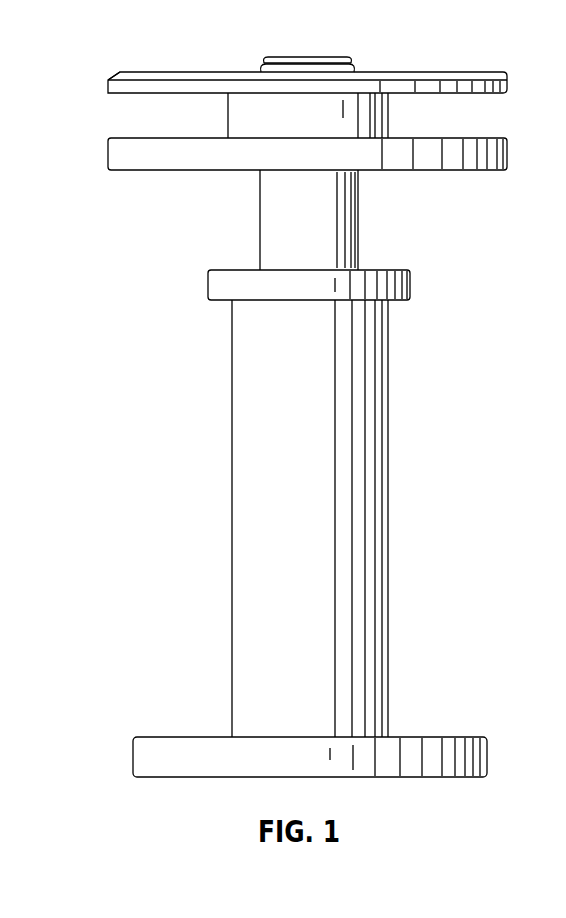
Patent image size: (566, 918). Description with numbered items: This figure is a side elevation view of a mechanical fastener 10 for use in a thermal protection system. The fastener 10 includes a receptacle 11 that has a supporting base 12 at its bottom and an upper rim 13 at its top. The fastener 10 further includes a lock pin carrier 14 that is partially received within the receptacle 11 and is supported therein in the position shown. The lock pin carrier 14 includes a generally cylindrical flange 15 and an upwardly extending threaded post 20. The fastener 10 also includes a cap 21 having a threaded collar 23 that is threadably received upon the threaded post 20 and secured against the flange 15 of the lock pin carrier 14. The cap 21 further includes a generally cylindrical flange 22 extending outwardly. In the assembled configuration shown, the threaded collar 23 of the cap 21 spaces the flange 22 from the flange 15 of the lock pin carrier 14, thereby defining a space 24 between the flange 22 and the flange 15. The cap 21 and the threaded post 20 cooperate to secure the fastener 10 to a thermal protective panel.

The fastener 10 is at (514, 350).
The receptacle 11 is at (388, 412).
The supporting base 12 is at (432, 737).
The upper rim 13 is at (410, 282).
The lock pin carrier 14 is at (258, 212).
The flange 15 is at (108, 150).
The threaded post 20 is at (350, 57).
The cap 21 is at (212, 72).
The flange 22 is at (108, 82).
The threaded collar 23 is at (390, 108).
The space 24 is at (140, 110).